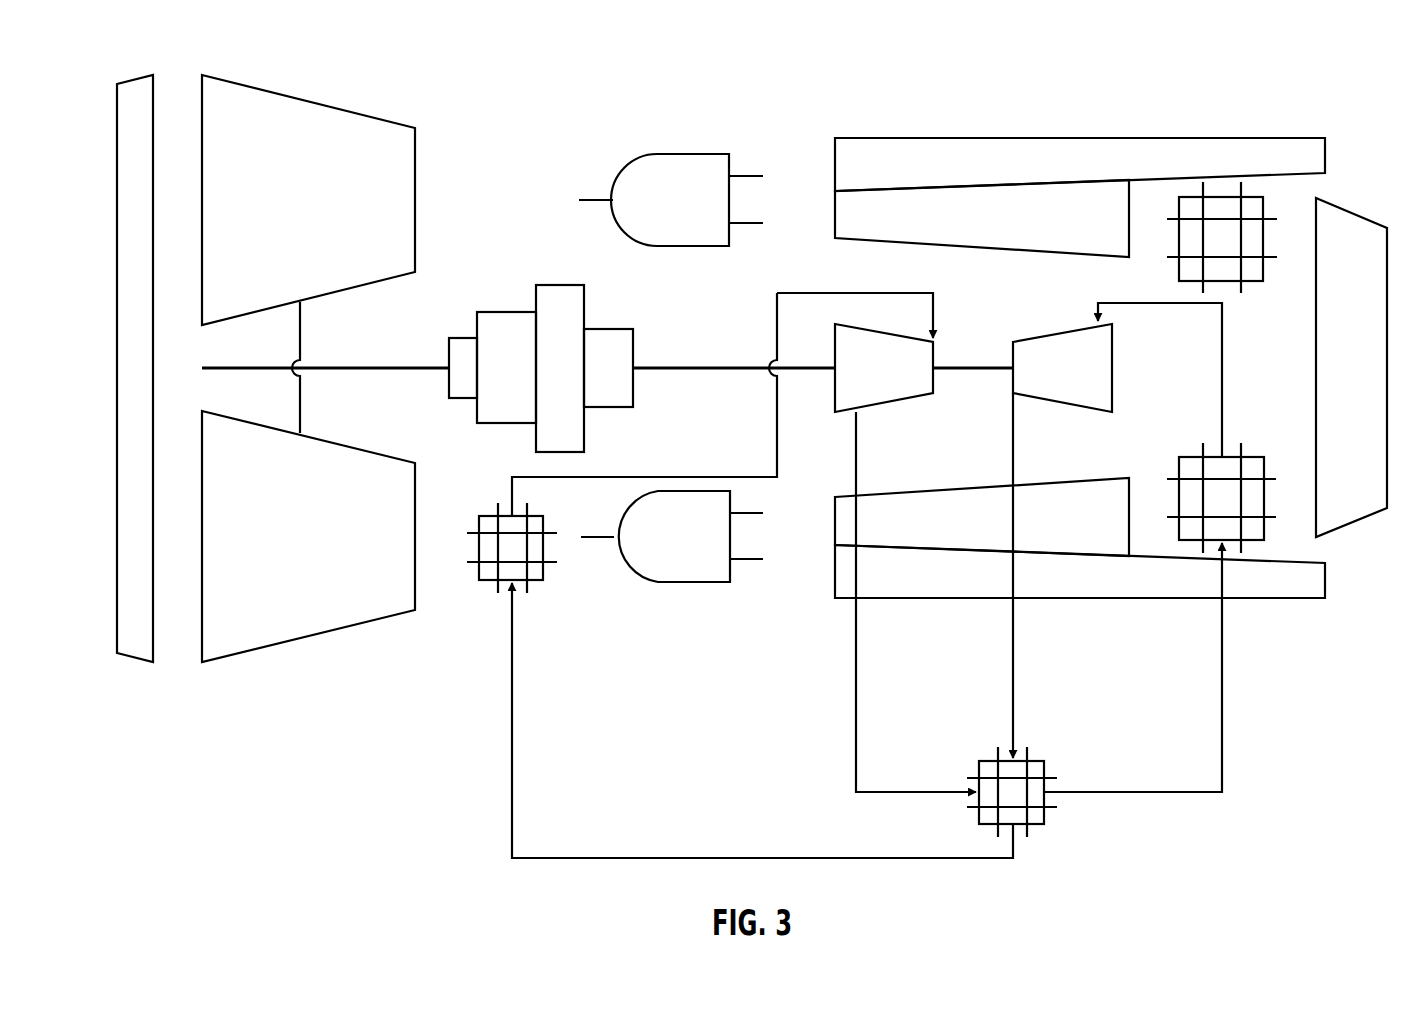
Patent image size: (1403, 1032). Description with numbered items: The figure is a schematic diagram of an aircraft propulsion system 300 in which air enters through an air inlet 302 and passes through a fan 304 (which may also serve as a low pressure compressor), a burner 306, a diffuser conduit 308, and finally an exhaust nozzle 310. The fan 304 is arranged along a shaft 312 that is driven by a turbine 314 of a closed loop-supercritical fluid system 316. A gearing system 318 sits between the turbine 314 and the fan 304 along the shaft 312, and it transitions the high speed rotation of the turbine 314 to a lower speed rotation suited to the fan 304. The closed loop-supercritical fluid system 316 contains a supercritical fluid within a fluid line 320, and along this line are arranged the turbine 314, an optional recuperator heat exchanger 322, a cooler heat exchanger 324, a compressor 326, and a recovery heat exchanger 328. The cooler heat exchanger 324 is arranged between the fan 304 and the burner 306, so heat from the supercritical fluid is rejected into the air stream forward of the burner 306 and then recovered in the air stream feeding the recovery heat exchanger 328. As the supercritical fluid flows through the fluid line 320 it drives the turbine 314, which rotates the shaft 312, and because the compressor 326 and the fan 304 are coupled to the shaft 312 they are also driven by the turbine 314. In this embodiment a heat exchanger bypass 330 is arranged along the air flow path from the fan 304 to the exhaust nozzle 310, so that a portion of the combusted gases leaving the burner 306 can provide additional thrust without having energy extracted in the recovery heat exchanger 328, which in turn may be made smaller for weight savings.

The aircraft propulsion system 300 is at (203, 50).
The air inlet 302 is at (141, 646).
The fan 304 is at (365, 132).
The burner 306 is at (685, 152).
The diffuser conduit 308 is at (1008, 238).
The exhaust nozzle 310 is at (1360, 507).
The shaft 312 is at (728, 365).
The turbine 314 is at (1100, 370).
The closed loop-supercritical fluid system 316 is at (1282, 869).
The gearing system 318 is at (560, 285).
The fluid line 320 is at (1163, 792).
The recuperator heat exchanger 322 is at (1040, 826).
The cooler heat exchanger 324 is at (538, 581).
The compressor 326 is at (895, 385).
The recovery heat exchanger 328 is at (1257, 273).
The heat exchanger bypass 330 is at (938, 152).